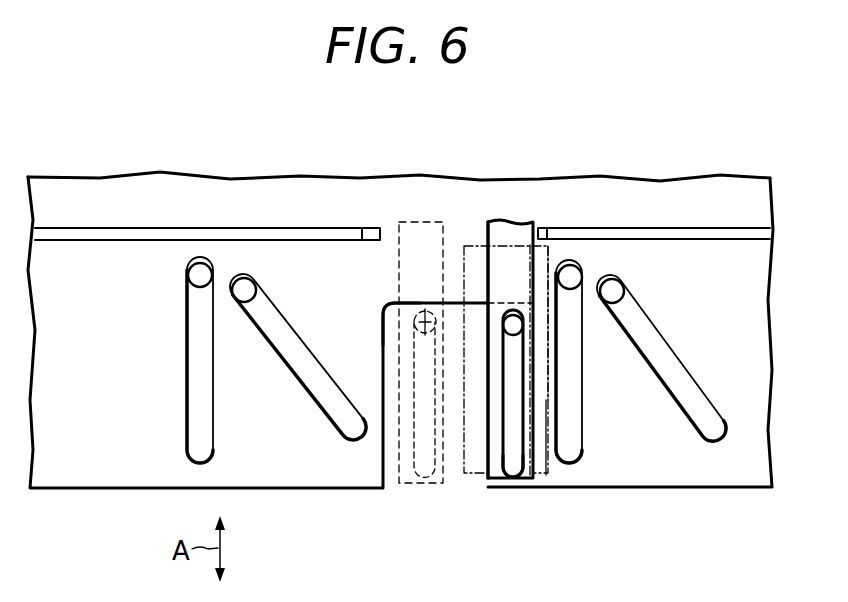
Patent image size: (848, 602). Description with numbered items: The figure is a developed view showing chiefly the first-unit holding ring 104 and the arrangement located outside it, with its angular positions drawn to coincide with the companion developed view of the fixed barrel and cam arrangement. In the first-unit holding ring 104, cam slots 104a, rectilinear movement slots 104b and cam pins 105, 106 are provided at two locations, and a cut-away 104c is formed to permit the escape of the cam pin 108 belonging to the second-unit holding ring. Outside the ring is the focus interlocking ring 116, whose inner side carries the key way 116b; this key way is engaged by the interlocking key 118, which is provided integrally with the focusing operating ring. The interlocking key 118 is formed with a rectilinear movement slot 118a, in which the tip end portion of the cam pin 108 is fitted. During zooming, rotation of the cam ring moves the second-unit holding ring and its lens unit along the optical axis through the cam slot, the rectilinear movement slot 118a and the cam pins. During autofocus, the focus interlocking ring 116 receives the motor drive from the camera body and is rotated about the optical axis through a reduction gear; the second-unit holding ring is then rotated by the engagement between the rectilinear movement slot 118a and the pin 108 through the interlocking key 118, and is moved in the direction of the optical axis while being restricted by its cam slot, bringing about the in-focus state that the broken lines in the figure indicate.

The first-unit holding ring 104 is at (757, 195).
The cam slot 104a is at (287, 368).
The rectilinear movement slot 104b is at (190, 376).
The cut-away 104c is at (387, 322).
The cam pin 105 is at (246, 289).
The cam pin 106 is at (199, 276).
The cam pin 108 is at (425, 308).
The focus interlocking ring 116 is at (466, 247).
The key way 116b is at (546, 247).
The interlocking key 118 is at (427, 222).
The rectilinear movement slot 118a is at (510, 442).